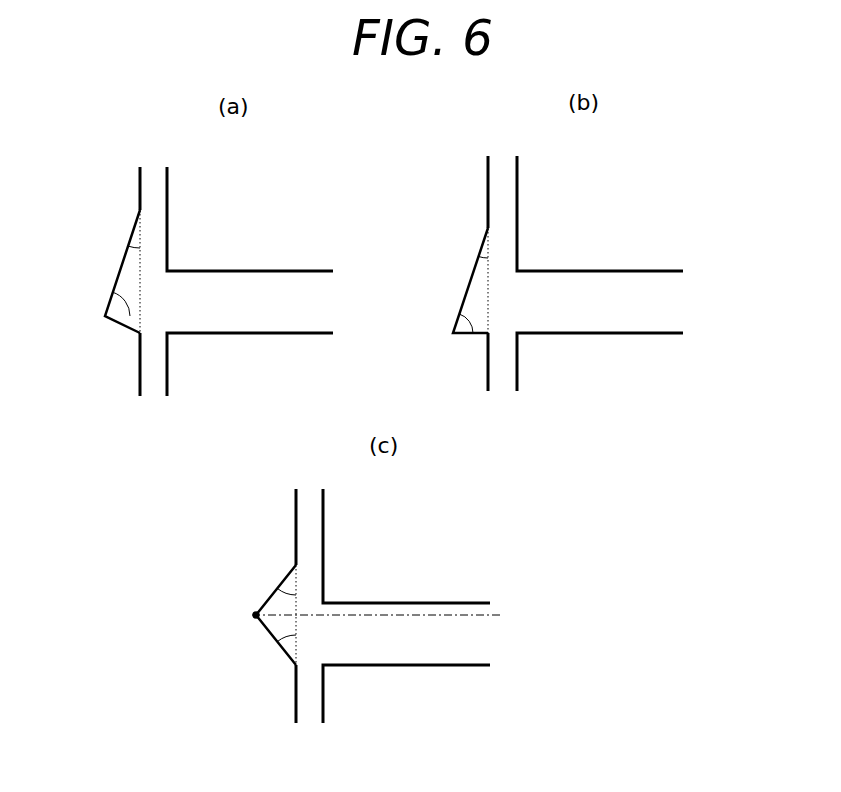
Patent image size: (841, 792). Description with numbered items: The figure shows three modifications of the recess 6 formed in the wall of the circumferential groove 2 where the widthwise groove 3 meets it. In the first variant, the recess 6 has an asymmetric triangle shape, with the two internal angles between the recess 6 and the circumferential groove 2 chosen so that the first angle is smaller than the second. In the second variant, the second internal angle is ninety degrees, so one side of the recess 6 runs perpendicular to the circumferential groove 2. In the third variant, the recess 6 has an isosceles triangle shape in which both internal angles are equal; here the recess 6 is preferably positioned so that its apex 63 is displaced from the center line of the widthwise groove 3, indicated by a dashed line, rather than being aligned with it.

The circumferential groove 2 is at (152, 184).
The widthwise groove 3 is at (262, 295).
The recess 6 is at (117, 297).
The apex 63 is at (256, 615).